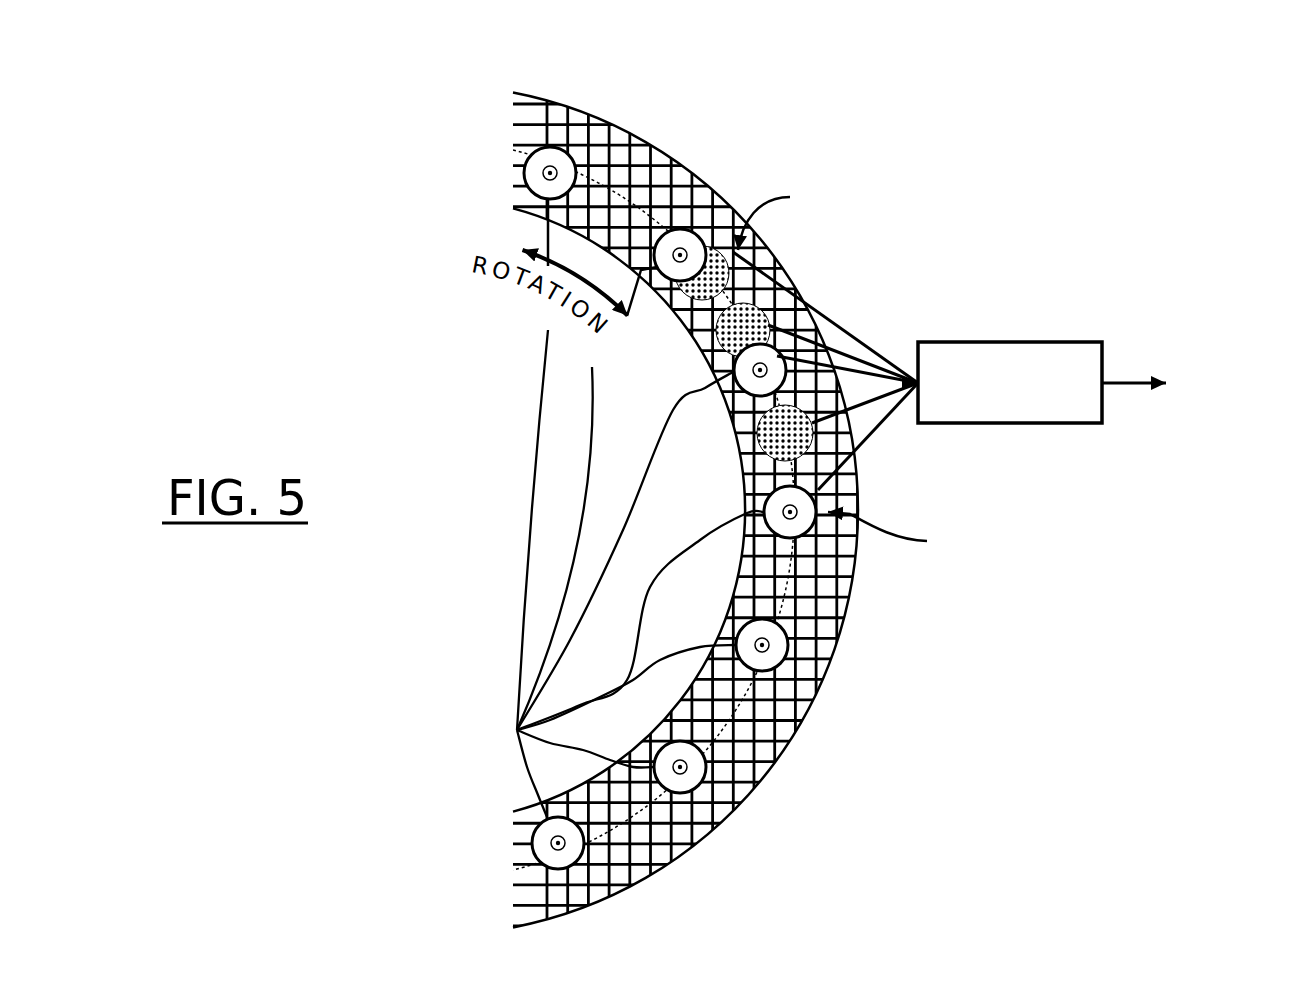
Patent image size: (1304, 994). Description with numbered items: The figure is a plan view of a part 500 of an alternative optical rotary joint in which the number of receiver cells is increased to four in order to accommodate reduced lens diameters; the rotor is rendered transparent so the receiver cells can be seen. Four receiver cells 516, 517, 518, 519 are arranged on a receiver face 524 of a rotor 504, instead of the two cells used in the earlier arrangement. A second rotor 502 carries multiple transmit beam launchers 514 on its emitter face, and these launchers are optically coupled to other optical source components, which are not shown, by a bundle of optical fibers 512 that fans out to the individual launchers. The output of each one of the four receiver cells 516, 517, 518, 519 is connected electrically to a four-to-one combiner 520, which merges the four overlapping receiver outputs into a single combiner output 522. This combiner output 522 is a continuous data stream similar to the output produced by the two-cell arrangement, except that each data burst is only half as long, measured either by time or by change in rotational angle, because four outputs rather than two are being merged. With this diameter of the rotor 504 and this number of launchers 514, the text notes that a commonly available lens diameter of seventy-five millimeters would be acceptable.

The part of an alternative optical rotary joint 500 is at (1036, 98).
The rotor 502 is at (700, 343).
The rotor 504 is at (820, 690).
The bundle of optical fibers 512 is at (515, 737).
The transmit beam launchers 514 is at (530, 180).
The receiver cell 516 is at (884, 537).
The receiver cell 517 is at (768, 437).
The receiver cell 518 is at (772, 327).
The receiver cell 519 is at (748, 245).
The 4:1 combiner 520 is at (980, 344).
The combiner output 522 is at (1114, 382).
The receiver face 524 is at (782, 728).